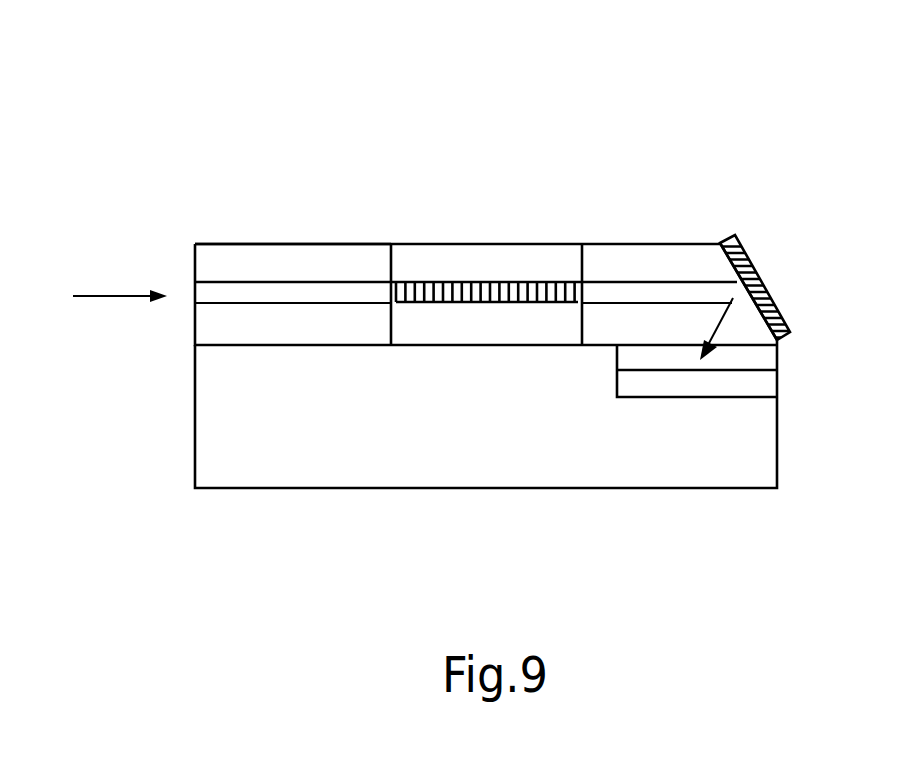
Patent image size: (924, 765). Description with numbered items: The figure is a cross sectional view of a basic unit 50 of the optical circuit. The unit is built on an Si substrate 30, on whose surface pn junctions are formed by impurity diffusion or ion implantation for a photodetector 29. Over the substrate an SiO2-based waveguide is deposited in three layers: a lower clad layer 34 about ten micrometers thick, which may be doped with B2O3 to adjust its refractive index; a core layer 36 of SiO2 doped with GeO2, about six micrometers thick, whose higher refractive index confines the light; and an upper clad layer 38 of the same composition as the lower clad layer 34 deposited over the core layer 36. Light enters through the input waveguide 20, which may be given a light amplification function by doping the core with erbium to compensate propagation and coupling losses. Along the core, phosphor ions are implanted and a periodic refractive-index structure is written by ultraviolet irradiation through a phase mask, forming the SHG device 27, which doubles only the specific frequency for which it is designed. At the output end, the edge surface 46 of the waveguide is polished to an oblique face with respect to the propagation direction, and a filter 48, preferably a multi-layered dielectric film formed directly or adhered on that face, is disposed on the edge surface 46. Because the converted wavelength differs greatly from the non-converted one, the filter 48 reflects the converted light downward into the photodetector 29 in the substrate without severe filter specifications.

The input waveguide 20 is at (280, 217).
The SHG device 27 is at (432, 219).
The photodetector 29 is at (707, 380).
The Si substrate 30 is at (269, 455).
The lower clad layer 34 is at (230, 328).
The core layer 36 is at (268, 298).
The upper clad layer 38 is at (351, 264).
The edge surface 46 is at (706, 270).
The filter 48 is at (737, 236).
The basic unit 50 is at (806, 197).